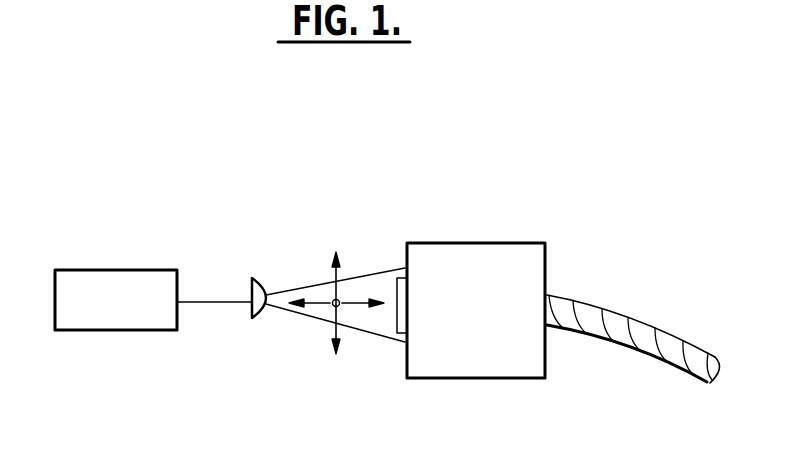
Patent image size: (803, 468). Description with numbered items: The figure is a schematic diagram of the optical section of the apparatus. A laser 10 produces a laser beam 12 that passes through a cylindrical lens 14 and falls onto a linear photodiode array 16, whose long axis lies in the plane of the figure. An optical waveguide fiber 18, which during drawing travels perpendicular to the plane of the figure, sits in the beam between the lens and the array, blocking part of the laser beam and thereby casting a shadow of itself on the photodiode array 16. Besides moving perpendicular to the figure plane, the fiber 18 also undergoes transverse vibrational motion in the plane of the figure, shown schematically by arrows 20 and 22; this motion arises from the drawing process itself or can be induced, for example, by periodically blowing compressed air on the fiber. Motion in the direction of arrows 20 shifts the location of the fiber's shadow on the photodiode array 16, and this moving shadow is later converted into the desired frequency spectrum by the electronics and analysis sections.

The laser 10 is at (81, 332).
The laser beam 12 is at (198, 300).
The cylindrical lens 14 is at (256, 320).
The linear photodiode array 16 is at (392, 272).
The optical waveguide fiber 18 is at (330, 298).
The arrows 20 is at (342, 266).
The arrows 22 is at (297, 300).